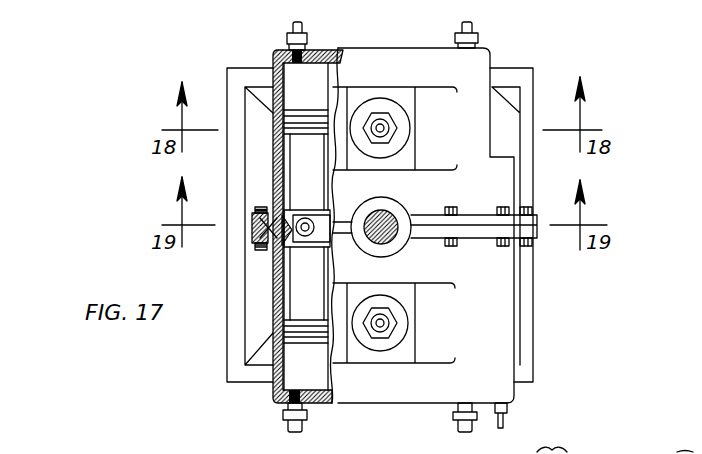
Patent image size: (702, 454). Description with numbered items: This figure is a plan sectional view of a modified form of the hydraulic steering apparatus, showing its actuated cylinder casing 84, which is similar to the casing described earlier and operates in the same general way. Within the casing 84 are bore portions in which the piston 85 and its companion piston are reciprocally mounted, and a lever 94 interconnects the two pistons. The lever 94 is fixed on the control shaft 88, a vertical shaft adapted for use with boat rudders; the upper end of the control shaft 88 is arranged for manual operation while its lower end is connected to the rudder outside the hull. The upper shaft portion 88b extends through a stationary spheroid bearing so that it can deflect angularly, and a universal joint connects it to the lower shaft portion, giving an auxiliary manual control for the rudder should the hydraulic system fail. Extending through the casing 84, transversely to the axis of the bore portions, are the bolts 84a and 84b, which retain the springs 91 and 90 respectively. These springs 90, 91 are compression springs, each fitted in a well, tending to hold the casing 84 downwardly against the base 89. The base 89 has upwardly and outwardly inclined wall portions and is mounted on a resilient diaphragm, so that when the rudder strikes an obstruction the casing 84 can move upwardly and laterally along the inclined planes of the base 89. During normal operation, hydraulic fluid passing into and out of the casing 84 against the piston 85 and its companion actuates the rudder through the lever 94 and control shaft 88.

The casing 84 is at (497, 307).
The bolt 84a is at (377, 337).
The bolt 84b is at (374, 118).
The piston 85 is at (308, 278).
The control shaft 88 is at (386, 217).
The upper shaft portion 88b is at (583, 452).
The base 89 is at (240, 287).
The spring 90 is at (404, 100).
The spring 91 is at (397, 350).
The lever 94 is at (323, 230).